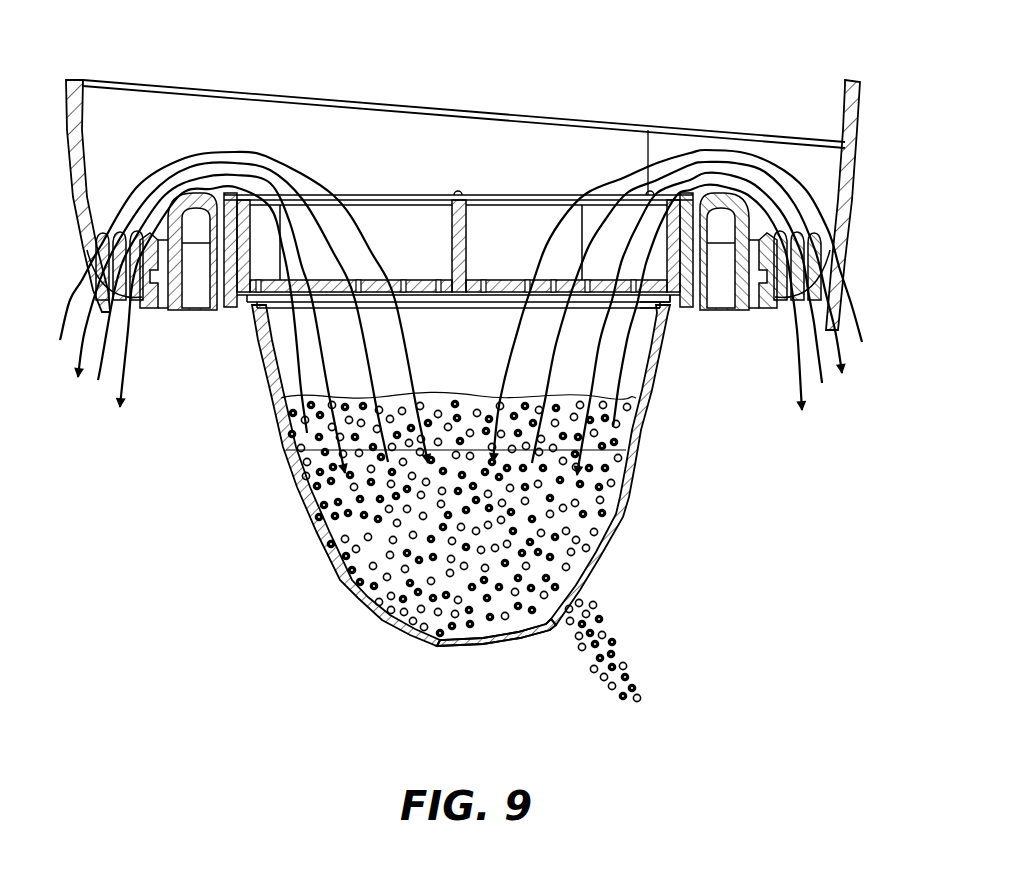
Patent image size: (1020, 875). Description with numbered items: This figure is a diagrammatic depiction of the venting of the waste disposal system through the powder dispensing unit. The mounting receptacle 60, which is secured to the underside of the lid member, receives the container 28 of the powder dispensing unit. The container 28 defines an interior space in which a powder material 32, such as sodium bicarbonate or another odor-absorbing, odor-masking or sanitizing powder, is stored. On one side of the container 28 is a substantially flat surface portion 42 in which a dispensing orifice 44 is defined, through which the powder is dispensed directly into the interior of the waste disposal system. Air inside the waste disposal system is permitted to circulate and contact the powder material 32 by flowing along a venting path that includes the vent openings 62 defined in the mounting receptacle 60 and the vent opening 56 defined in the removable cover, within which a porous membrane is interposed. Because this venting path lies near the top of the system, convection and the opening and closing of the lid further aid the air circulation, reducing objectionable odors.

The mounting receptacle 60 is at (322, 98).
The vent openings 62 is at (797, 337).
The container 28 is at (290, 473).
The powder material 32 is at (372, 577).
The substantially flat surface portion 42 is at (600, 557).
The dispensing orifice 44 is at (570, 608).
The vent opening 56 is at (640, 320).